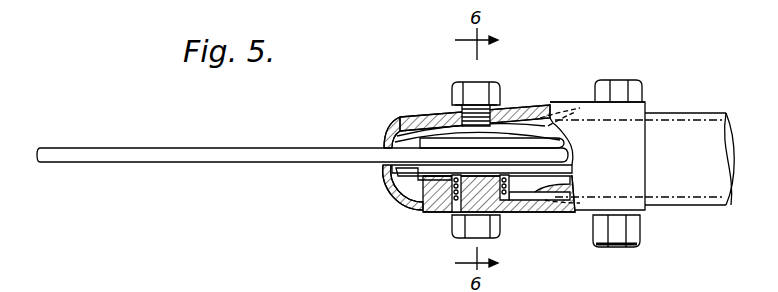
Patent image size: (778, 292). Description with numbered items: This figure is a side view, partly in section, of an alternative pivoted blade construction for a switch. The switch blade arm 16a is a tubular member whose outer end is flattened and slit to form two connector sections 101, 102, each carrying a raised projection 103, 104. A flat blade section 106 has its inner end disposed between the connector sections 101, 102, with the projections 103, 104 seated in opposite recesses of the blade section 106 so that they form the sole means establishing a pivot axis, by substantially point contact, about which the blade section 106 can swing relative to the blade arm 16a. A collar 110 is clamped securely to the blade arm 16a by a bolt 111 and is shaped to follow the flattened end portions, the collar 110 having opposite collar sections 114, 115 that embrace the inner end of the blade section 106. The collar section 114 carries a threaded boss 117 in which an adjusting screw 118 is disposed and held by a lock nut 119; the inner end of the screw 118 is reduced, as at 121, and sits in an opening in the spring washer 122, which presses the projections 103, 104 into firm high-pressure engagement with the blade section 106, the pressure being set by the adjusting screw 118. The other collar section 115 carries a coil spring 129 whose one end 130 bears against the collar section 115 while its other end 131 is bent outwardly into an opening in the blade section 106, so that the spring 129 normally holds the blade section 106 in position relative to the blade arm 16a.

The blade section 106 is at (230, 162).
The collar section 114 is at (432, 118).
The spring washer 122 is at (388, 135).
The projection 103 is at (418, 121).
The reduced inner end of the screw 121 is at (510, 120).
The adjusting screw 118 is at (485, 88).
The lock nut 119 is at (453, 88).
The threaded boss 117 is at (496, 106).
The other end of the spring 131 is at (392, 184).
The collar section 115 is at (374, 170).
The projection 104 is at (453, 214).
The coil spring 129 is at (452, 200).
The one end of the spring 130 is at (559, 196).
The connector section 102 is at (522, 174).
The connector section 101 is at (566, 133).
The collar 110 is at (562, 99).
The bolt 111 is at (620, 88).
The switch blade arm 16a is at (688, 127).